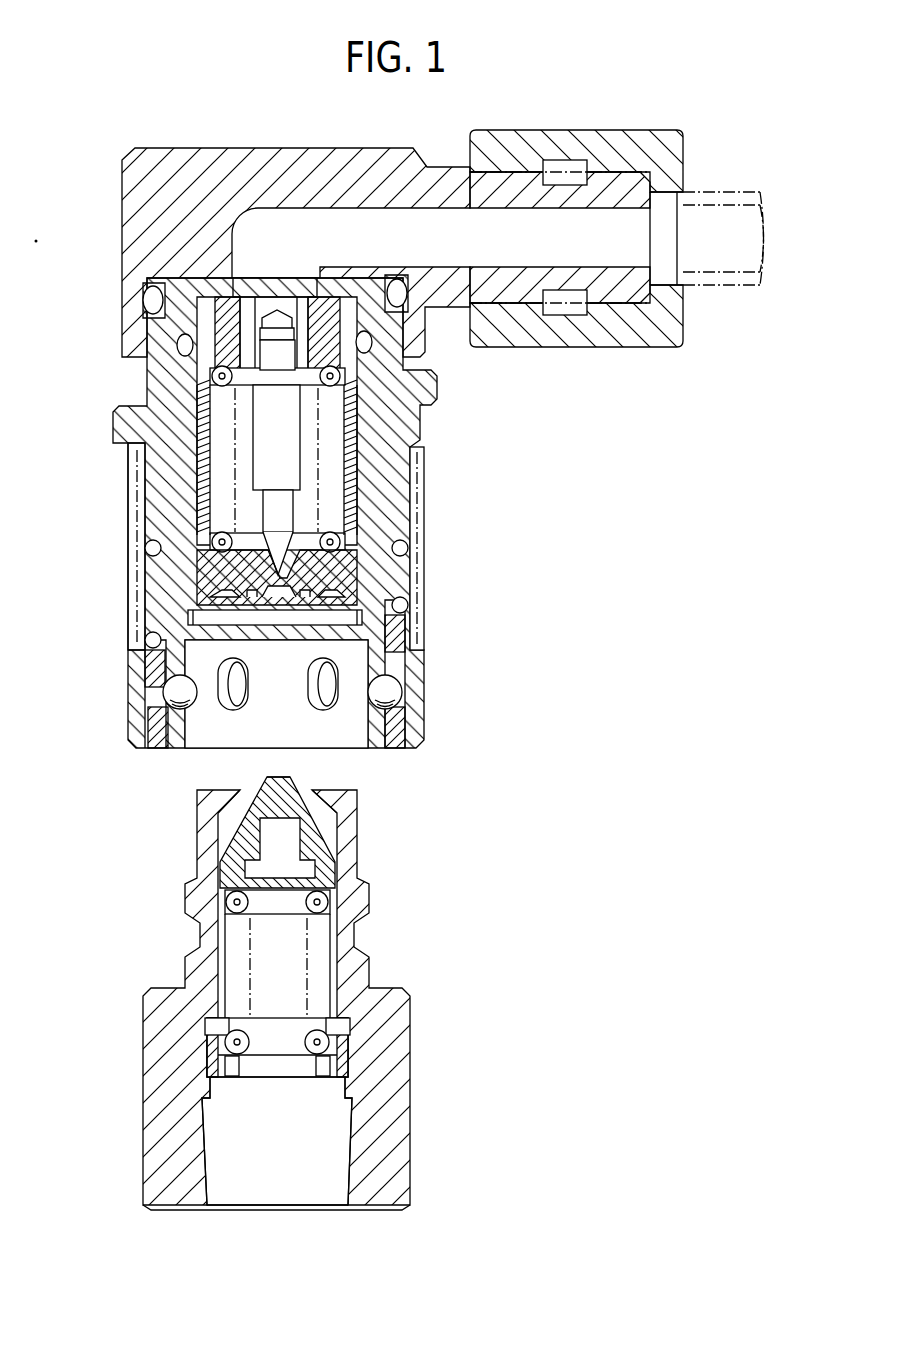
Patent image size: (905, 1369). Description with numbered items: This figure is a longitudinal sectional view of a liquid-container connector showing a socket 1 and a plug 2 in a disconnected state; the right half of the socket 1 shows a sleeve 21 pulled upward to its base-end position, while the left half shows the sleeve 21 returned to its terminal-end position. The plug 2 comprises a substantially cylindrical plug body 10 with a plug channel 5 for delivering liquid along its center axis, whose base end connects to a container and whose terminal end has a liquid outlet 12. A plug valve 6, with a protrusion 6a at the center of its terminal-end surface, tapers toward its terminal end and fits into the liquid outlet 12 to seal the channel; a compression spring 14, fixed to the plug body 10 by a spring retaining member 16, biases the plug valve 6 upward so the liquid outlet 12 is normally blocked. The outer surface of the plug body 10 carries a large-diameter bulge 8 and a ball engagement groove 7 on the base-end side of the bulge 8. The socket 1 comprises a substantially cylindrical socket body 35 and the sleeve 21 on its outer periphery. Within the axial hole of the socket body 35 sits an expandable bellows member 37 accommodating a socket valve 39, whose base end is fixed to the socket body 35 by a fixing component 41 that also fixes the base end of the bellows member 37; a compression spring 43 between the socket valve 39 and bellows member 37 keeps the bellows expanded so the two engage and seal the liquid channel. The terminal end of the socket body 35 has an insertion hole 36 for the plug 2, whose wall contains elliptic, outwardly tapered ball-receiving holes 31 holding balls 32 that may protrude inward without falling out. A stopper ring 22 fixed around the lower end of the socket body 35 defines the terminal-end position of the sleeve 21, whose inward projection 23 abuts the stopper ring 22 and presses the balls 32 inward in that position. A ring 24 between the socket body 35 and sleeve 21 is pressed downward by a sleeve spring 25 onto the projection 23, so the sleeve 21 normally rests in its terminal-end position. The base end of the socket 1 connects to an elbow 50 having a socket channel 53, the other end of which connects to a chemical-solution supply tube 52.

The socket 1 is at (88, 406).
The plug 2 is at (128, 1102).
The plug channel 5 is at (266, 1175).
The plug valve 6 is at (320, 845).
The protrusion 6a is at (282, 778).
The ball engagement groove 7 is at (362, 940).
The large-diameter bulge 8 is at (369, 905).
The plug body 10 is at (360, 862).
The liquid outlet 12 is at (240, 798).
The compression spring 14 is at (300, 990).
The spring retaining member 16 is at (340, 1052).
The sleeve 21 is at (430, 462).
The stopper ring 22 is at (398, 738).
The projection 23 is at (398, 660).
The ring 24 is at (390, 628).
The sleeve spring 25 is at (400, 577).
The ball-receiving holes 31 is at (178, 668).
The balls 32 is at (172, 698).
The socket body 35 is at (385, 518).
The insertion hole 36 is at (270, 737).
The bellows member 37 is at (350, 533).
The socket valve 39 is at (296, 575).
The fixing component 41 is at (312, 300).
The compression spring 43 is at (318, 432).
The elbow 50 is at (270, 148).
The chemical-solution supply tube 52 is at (732, 180).
The socket channel 53 is at (428, 240).